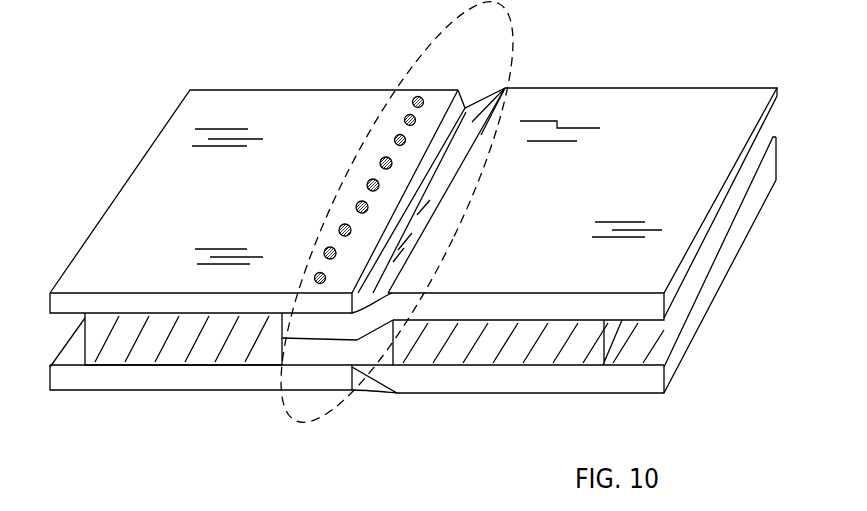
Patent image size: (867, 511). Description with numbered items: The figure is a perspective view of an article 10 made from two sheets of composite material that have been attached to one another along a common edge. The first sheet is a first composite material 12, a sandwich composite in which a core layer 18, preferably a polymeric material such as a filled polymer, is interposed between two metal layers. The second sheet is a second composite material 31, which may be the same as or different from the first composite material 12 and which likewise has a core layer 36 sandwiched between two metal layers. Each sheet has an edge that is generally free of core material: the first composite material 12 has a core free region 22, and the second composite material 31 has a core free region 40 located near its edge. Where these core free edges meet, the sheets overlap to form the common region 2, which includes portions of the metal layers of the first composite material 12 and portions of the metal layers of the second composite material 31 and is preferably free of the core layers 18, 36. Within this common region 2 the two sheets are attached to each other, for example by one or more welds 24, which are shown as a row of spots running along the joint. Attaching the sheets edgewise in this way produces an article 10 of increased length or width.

The article 10 is at (648, 54).
The first composite material 12 is at (246, 237).
The second composite material 31 is at (600, 193).
The core free region 22 is at (400, 81).
The welds 24 is at (322, 255).
The core layer 18 is at (258, 343).
The core layer 36 is at (528, 345).
The common region 2 is at (281, 403).
The core free region 40 is at (290, 436).